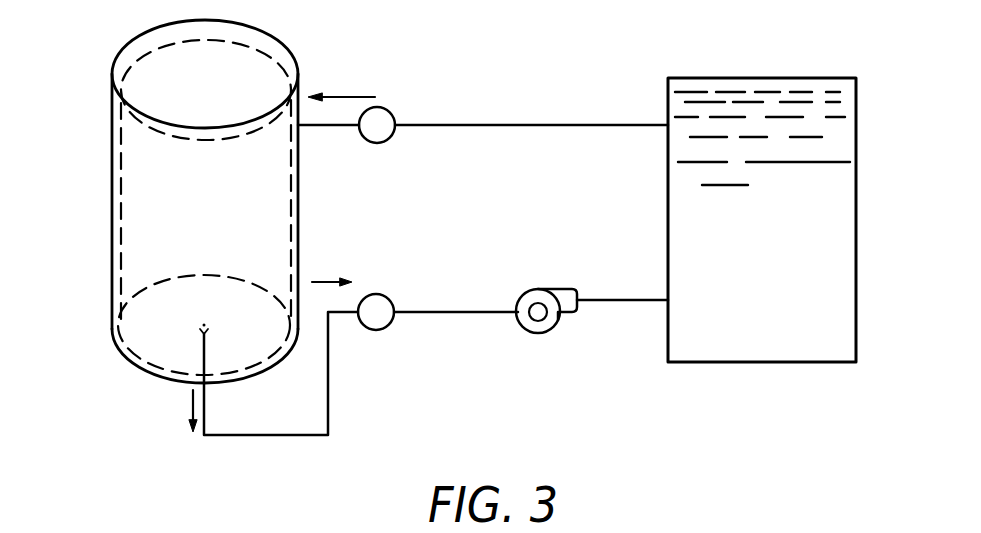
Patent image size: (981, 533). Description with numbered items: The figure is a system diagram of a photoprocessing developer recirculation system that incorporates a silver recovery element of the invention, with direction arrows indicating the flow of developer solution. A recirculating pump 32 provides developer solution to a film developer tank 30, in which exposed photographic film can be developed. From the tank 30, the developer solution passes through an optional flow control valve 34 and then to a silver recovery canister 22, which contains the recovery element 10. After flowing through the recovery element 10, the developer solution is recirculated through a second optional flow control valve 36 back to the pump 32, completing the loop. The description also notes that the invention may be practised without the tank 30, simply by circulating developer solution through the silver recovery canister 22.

The recovery element 10 is at (168, 201).
The silver recovery canister 22 is at (112, 205).
The film developer tank 30 is at (670, 97).
The recirculating pump 32 is at (552, 327).
The flow control valve 34 is at (378, 143).
The flow control valve 36 is at (378, 330).